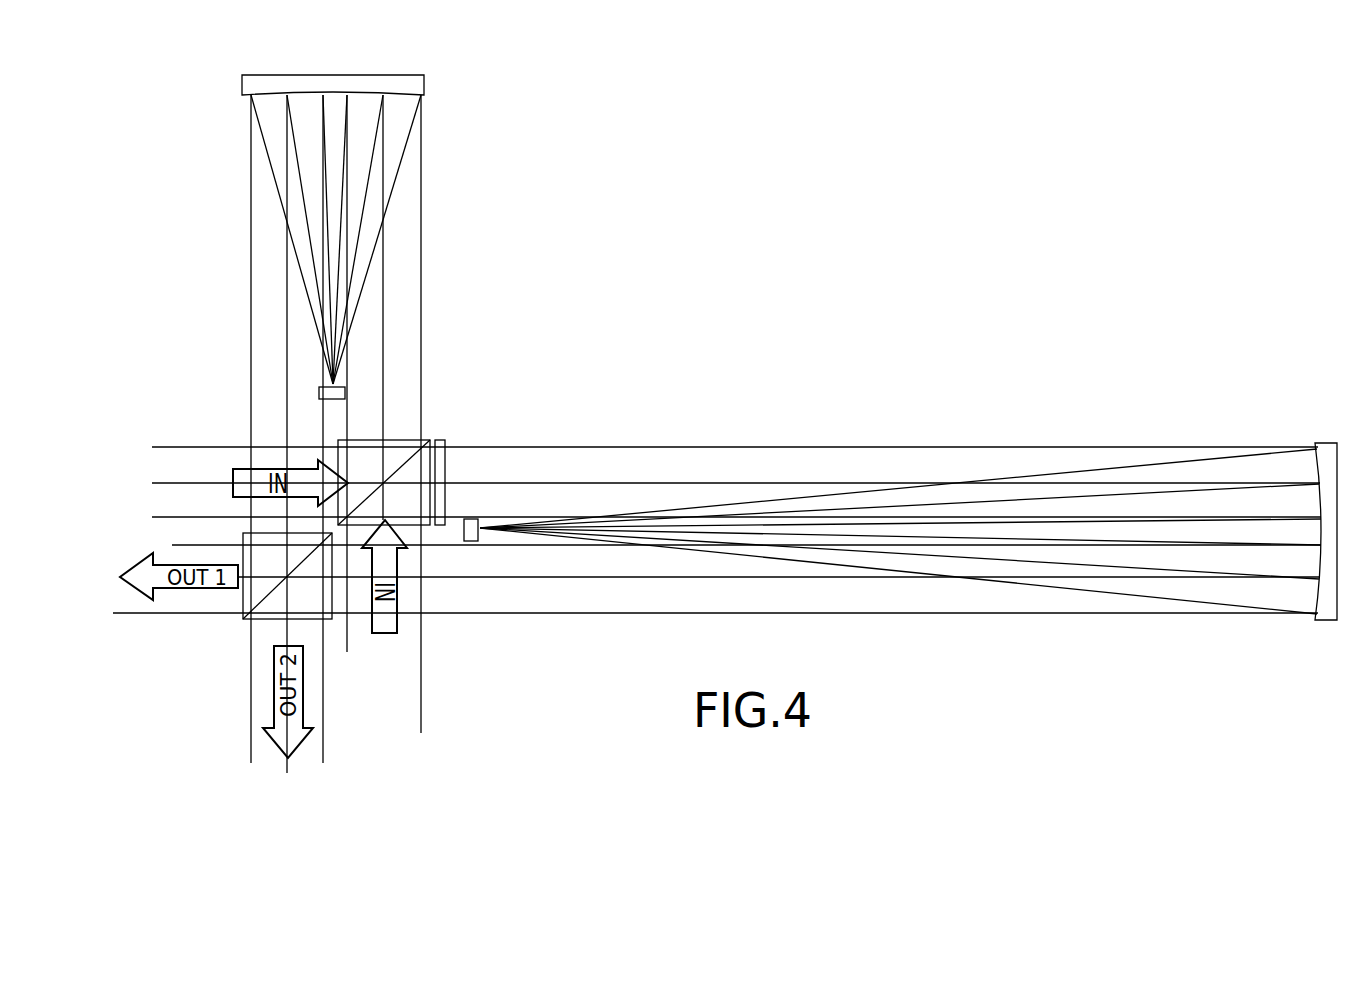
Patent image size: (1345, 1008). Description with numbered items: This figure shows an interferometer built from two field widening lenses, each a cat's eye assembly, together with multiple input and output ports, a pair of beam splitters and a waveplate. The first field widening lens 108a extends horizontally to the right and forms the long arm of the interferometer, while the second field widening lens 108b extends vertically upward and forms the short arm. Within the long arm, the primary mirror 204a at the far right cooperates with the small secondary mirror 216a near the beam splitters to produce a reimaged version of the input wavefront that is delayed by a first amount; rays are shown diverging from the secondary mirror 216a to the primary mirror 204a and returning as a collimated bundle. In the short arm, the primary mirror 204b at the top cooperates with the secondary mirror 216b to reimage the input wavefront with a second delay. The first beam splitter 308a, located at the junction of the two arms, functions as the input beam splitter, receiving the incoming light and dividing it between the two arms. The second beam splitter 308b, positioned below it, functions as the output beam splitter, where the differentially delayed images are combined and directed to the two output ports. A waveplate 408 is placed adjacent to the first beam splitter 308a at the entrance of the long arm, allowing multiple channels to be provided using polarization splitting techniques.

The first field widening lens 108a is at (870, 428).
The second field widening lens 108b is at (440, 255).
The primary mirror of the first field widening lens 204a is at (1315, 443).
The primary mirror of the second field widening lens 204b is at (380, 74).
The secondary mirror of the first field widening lens 216a is at (472, 542).
The secondary mirror of the second field widening lens 216b is at (345, 392).
The first beam splitter 308a is at (400, 440).
The second beam splitter 308b is at (327, 620).
The waveplate 408 is at (447, 443).